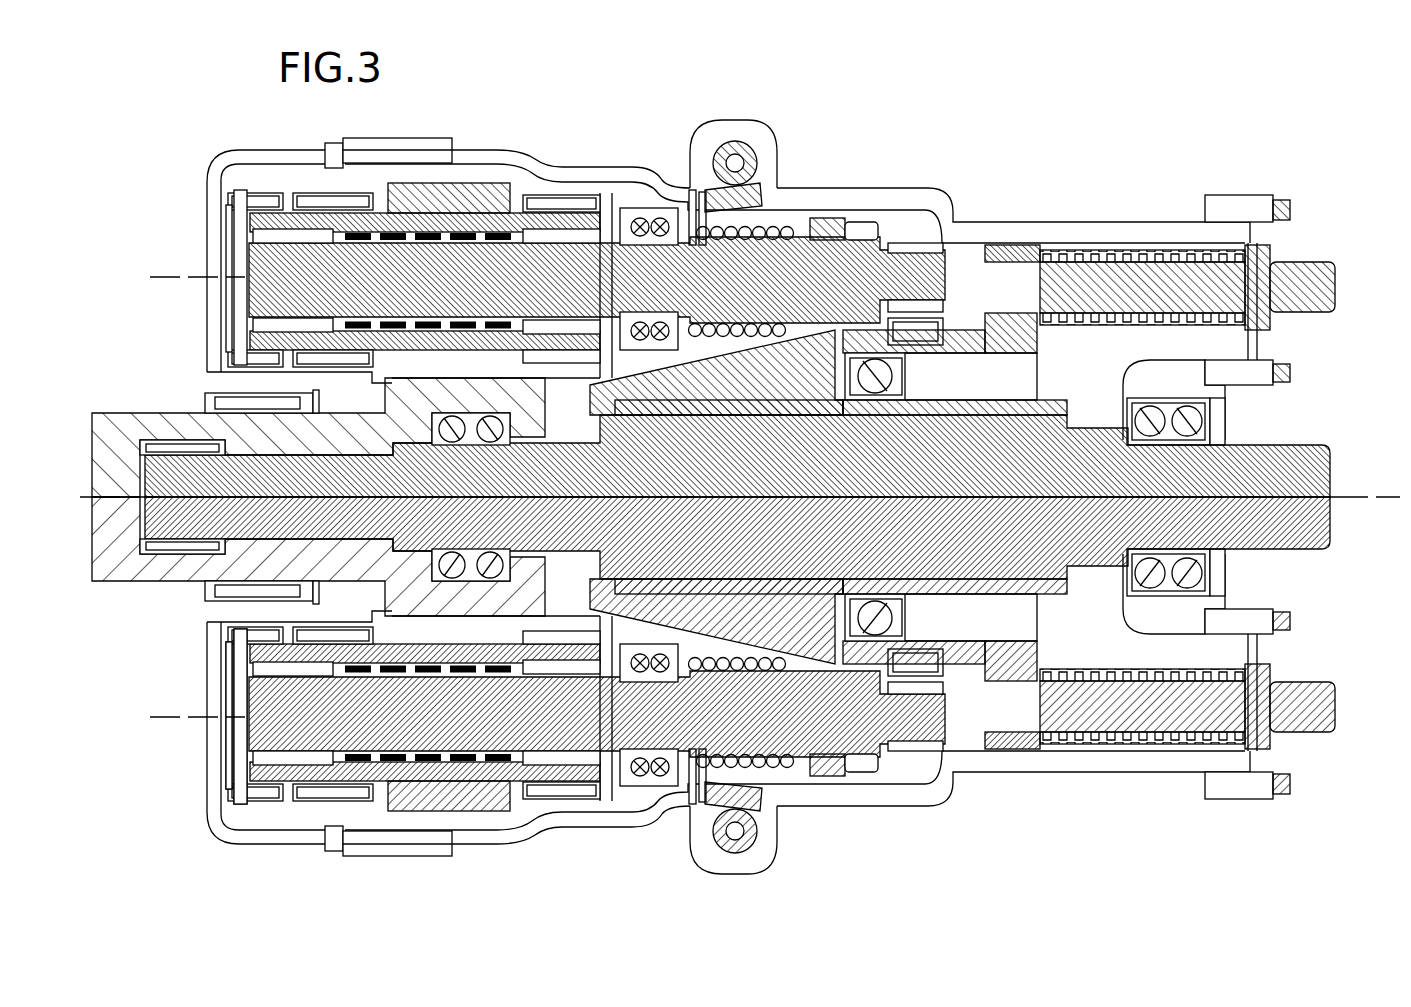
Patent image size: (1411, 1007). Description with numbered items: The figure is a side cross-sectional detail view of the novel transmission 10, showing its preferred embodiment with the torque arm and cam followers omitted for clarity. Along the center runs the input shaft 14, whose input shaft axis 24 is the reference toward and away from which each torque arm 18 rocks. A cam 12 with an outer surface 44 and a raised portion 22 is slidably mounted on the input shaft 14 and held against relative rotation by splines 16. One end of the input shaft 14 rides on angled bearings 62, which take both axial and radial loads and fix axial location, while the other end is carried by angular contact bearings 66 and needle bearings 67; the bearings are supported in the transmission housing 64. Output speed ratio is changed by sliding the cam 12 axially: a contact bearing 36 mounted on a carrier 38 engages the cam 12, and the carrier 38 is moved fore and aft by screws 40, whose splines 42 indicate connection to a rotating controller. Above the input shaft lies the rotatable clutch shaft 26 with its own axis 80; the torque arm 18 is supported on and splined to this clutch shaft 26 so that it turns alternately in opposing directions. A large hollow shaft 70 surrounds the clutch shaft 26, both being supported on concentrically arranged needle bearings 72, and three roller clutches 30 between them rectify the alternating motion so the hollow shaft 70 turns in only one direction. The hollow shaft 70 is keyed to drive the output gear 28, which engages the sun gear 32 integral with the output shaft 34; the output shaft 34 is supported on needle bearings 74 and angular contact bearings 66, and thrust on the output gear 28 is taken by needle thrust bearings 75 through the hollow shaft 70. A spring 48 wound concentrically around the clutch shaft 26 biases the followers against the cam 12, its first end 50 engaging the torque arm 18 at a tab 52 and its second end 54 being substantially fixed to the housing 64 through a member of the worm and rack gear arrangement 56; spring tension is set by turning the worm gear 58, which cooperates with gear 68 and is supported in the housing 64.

The transmission 10 is at (198, 146).
The cam 12 is at (756, 395).
The input shaft 14 is at (1325, 445).
The splines 16 is at (1040, 412).
The torque arm 18 is at (995, 222).
The raised portion 22 is at (910, 360).
The input shaft axis 24 is at (1365, 495).
The clutch shaft 26 is at (683, 289).
The output gear 28 is at (470, 183).
The roller clutch 30 is at (395, 240).
The sun gear 32 is at (235, 332).
The output shaft 34 is at (118, 413).
The contact bearing 36 is at (905, 380).
The carrier 38 is at (1040, 333).
The screws 40 is at (1072, 270).
The splines 42 is at (1330, 268).
The outer surface 44 is at (700, 617).
The spring 48 is at (826, 226).
The first end 50 is at (893, 320).
The tab 52 is at (866, 230).
The second end 54 is at (690, 196).
The worm and rack gear arrangement 56 is at (722, 114).
The worm gear 58 is at (757, 158).
The angled bearings 62 is at (1200, 578).
The transmission housing 64 is at (567, 178).
The angular contact bearings 66 is at (470, 548).
The needle bearings 67 is at (165, 565).
The gear 68 is at (762, 205).
The hollow shaft 70 is at (318, 213).
The needle bearings 72 is at (292, 238).
The needle bearings 74 is at (255, 408).
The needle thrust bearings 75 is at (235, 762).
The axis 80 is at (170, 275).